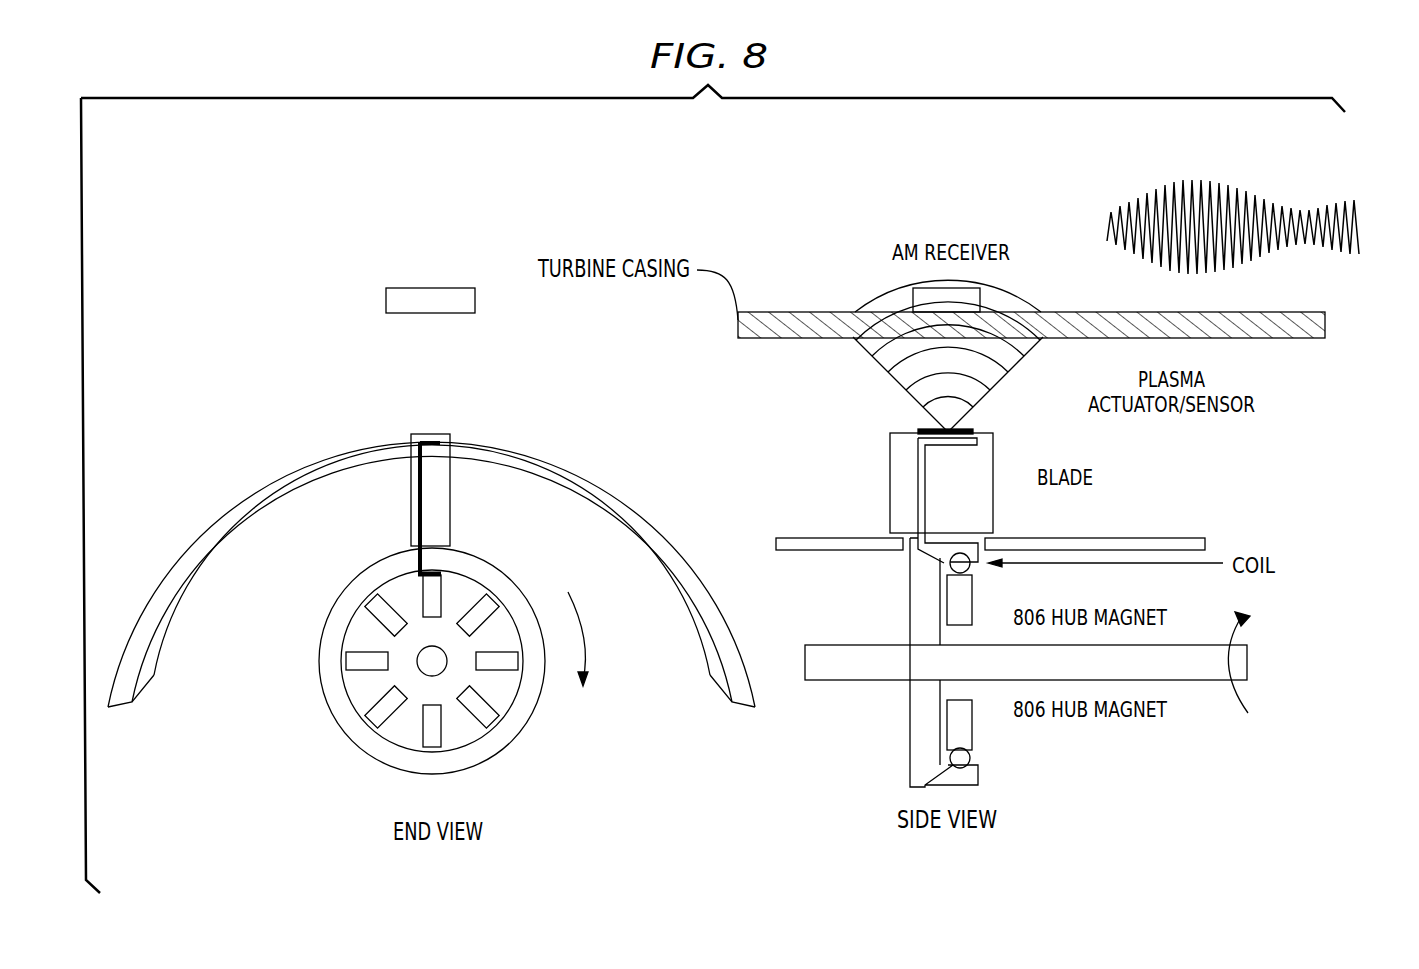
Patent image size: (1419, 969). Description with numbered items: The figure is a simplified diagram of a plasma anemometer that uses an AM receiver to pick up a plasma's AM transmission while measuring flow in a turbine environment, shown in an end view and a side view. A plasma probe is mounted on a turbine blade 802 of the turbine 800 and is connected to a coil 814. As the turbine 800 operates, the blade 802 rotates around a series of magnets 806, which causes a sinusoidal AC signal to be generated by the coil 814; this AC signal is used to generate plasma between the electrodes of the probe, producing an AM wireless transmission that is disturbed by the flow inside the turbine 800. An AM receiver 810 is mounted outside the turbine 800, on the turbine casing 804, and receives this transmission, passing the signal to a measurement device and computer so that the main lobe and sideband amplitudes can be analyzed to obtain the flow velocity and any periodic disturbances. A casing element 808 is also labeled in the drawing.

The turbine 800 is at (483, 747).
The turbine blade 802 is at (411, 517).
The turbine casing 804 is at (385, 300).
The magnets 806 is at (490, 606).
The turbine casing 808 is at (258, 370).
The AM receiver 810 is at (420, 664).
The coil 814 is at (1177, 563).